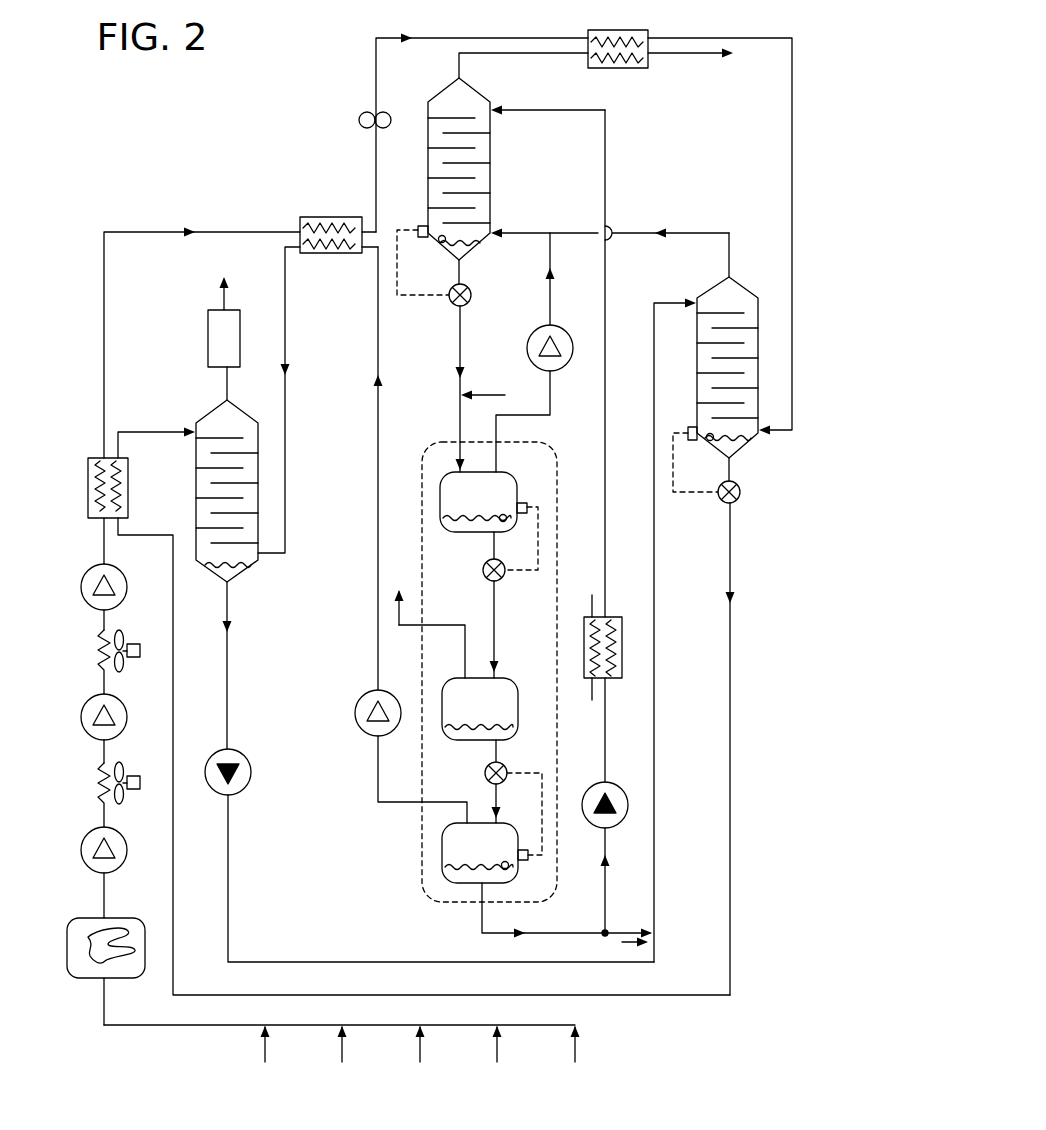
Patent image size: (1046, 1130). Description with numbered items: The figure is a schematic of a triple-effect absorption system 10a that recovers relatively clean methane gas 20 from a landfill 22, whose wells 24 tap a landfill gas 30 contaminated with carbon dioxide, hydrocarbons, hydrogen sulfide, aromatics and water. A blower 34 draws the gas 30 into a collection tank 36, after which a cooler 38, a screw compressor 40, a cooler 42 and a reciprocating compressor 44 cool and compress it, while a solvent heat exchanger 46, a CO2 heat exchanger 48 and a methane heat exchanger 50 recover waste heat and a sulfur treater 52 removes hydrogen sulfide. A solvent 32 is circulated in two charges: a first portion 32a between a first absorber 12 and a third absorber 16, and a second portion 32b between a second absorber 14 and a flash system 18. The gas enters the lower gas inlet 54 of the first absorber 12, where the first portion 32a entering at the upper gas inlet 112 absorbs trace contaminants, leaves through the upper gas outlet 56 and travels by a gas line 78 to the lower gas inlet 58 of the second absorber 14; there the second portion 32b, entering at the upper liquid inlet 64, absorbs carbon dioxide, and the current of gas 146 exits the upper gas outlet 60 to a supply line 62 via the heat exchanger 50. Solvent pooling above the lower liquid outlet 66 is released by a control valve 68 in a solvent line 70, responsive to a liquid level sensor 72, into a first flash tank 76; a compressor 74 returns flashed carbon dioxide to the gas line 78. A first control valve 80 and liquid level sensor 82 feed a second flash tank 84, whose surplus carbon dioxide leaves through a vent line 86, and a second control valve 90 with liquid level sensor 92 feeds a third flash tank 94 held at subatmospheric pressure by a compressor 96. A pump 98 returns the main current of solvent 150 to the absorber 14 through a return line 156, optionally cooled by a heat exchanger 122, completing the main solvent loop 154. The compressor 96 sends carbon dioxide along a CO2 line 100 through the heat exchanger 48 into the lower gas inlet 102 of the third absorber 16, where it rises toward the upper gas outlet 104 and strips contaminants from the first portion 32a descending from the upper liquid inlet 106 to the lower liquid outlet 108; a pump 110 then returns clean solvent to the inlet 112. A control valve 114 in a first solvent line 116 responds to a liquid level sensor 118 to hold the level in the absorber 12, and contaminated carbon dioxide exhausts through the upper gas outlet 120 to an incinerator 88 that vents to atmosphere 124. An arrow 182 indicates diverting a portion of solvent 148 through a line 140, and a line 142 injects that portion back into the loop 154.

The triple-effect absorption system 10a is at (173, 188).
The first absorber 12 is at (738, 287).
The second absorber 14 is at (443, 96).
The third absorber 16 is at (205, 415).
The flash system 18 is at (446, 442).
The methane gas 20 is at (710, 57).
The landfill 22 is at (616, 1043).
The wells 24 is at (264, 1053).
The landfill gas 30 is at (89, 960).
The solvent 32 is at (470, 245).
The first portion of solvent 32a is at (220, 585).
The second portion of solvent 32b is at (463, 252).
The blower 34 is at (82, 845).
The collection tank 36 is at (128, 918).
The cooler 38 is at (98, 785).
The screw compressor 40 is at (85, 739).
The cooler 42 is at (98, 650).
The reciprocating compressor 44 is at (80, 587).
The solvent heat exchanger 46 is at (88, 490).
The CO2 heat exchanger 48 is at (330, 217).
The methane heat exchanger 50 is at (630, 68).
The sulfur treater 52 is at (358, 120).
The lower gas inlet 54 is at (762, 425).
The upper gas outlet 56 is at (727, 280).
The lower gas inlet 58 is at (495, 225).
The upper gas outlet 60 is at (470, 83).
The supply line 62 is at (675, 53).
The upper liquid inlet 64 is at (493, 112).
The lower liquid outlet 66 is at (456, 250).
The control valve 68 is at (450, 303).
The solvent line 70 is at (462, 342).
The liquid level sensor 72 is at (418, 226).
The compressor 74 is at (570, 345).
The first flash tank 76 is at (440, 510).
The gas line 78 is at (578, 233).
The first control valve 80 is at (485, 580).
The liquid level sensor 82 is at (520, 500).
The second flash tank 84 is at (520, 710).
The vent line 86 is at (400, 581).
The incinerator 88 is at (208, 327).
The second control valve 90 is at (485, 770).
The liquid level sensor 92 is at (522, 860).
The third flash tank 94 is at (440, 832).
The compressor 96 is at (356, 722).
The pump 98 is at (620, 790).
The CO2 line 100 is at (376, 488).
The lower gas inlet 102 is at (262, 554).
The upper gas outlet 104 is at (220, 395).
The upper liquid inlet 106 is at (195, 435).
The lower liquid outlet 108 is at (240, 595).
The pump 110 is at (251, 790).
The upper gas inlet 112 is at (690, 303).
The control valve 114 is at (717, 505).
The first solvent line 116 is at (728, 742).
The liquid level sensor 118 is at (690, 428).
The upper gas outlet 120 is at (228, 380).
The heat exchanger 122 is at (624, 637).
The atmosphere 124 is at (230, 282).
The line 140 is at (618, 942).
The line 142 is at (487, 394).
The current of gas 146 is at (499, 230).
The portion of solvent 148 is at (637, 930).
The main current of solvent 150 is at (495, 106).
The main solvent loop 154 is at (458, 355).
The return line 156 is at (605, 167).
The arrow 182 is at (630, 947).